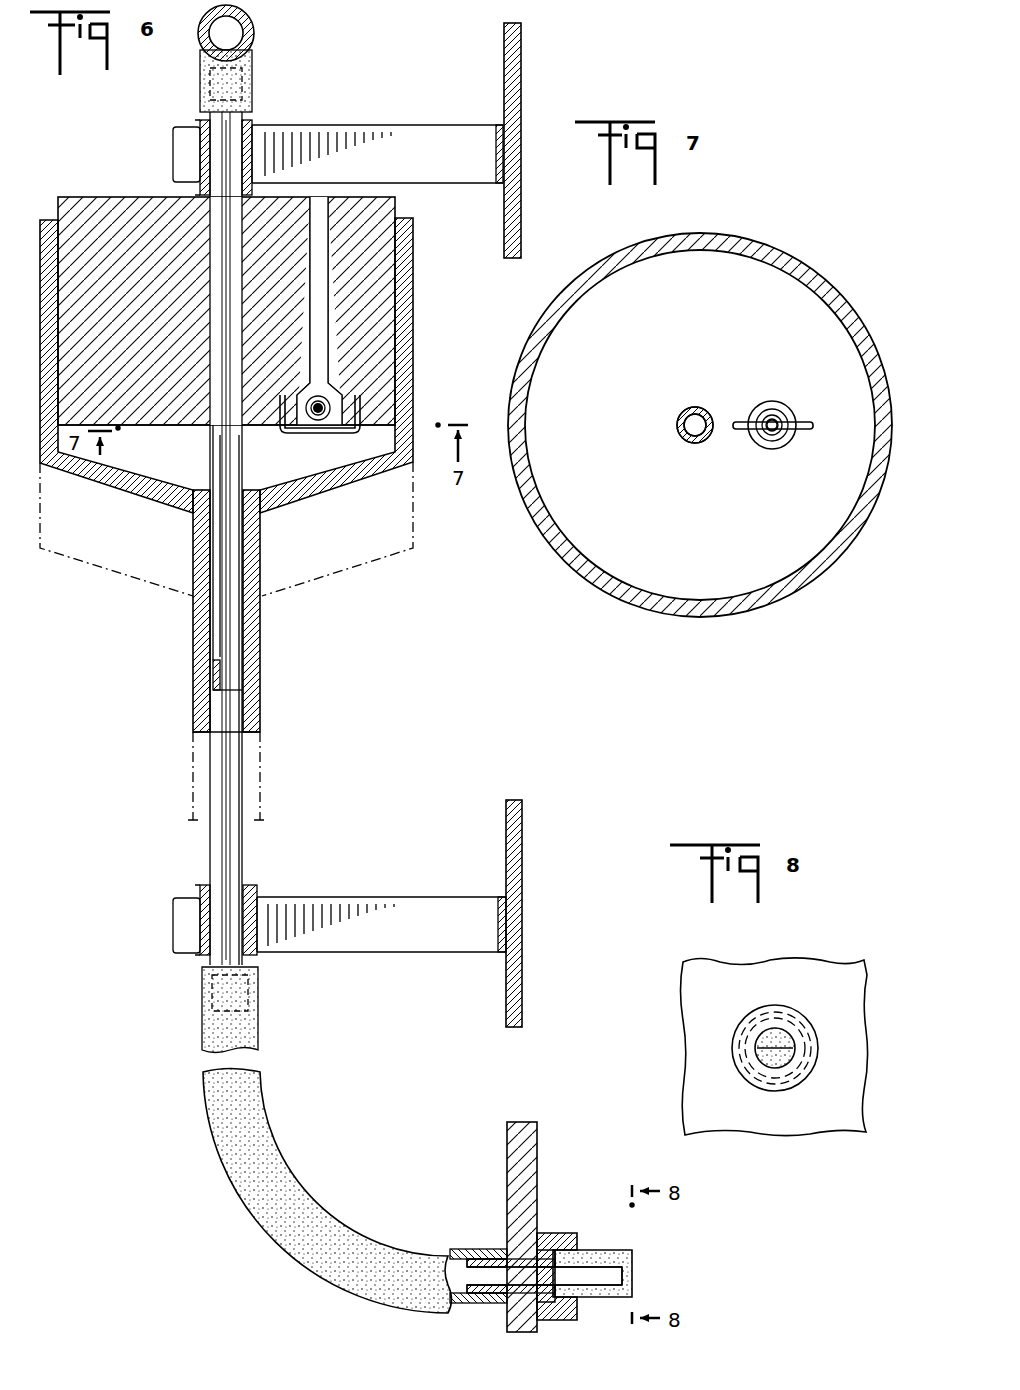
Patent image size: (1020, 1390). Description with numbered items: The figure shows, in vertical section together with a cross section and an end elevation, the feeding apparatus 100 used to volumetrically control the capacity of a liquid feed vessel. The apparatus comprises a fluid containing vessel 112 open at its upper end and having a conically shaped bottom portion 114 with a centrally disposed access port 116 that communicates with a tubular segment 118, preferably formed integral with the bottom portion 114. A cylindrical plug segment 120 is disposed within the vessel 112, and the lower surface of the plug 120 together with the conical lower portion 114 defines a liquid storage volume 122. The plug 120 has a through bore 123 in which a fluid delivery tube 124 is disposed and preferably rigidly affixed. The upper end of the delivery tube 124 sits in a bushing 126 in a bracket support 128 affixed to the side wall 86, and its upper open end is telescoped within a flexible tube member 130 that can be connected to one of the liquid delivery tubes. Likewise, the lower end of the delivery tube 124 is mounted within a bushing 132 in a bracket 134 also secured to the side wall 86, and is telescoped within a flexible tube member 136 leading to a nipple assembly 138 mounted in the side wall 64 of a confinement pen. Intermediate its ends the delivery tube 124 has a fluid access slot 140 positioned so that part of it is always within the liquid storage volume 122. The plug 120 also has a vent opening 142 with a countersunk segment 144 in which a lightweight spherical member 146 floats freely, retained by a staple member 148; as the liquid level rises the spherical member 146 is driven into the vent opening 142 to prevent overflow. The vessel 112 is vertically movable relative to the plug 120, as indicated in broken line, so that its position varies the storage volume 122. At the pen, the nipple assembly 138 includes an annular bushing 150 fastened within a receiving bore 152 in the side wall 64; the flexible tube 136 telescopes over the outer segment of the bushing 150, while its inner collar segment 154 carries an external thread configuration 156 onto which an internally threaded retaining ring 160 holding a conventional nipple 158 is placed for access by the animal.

In FIG. 6, the side wall 64 is at (522, 1142).
In FIG. 8, the side wall 64 is at (700, 988).
In FIG. 6, the side wall 86 is at (508, 45).
In FIG. 6, the feeding apparatus 100 is at (348, 612).
In FIG. 7, the feeding apparatus 100 is at (790, 232).
In FIG. 6, the fluid containing vessel 112 is at (405, 298).
In FIG. 7, the fluid containing vessel 112 is at (842, 528).
In FIG. 6, the conically shaped bottom portion 114 is at (135, 492).
In FIG. 6, the access port 116 is at (252, 497).
In FIG. 6, the tubular segment 118 is at (258, 700).
In FIG. 6, the cylindrical plug segment 120 is at (105, 225).
In FIG. 7, the cylindrical plug segment 120 is at (640, 575).
In FIG. 6, the liquid storage volume 122 is at (165, 456).
In FIG. 6, the through bore 123 is at (210, 272).
In FIG. 7, the through bore 123 is at (684, 410).
In FIG. 6, the fluid delivery tube 124 is at (222, 340).
In FIG. 7, the fluid delivery tube 124 is at (700, 437).
In FIG. 6, the bushing 126 is at (247, 130).
In FIG. 6, the bracket support 128 is at (386, 144).
In FIG. 6, the flexible tube member 130 is at (250, 26).
In FIG. 6, the bushing 132 is at (255, 885).
In FIG. 6, the bracket 134 is at (395, 920).
In FIG. 6, the flexible tube member 136 is at (280, 1225).
In FIG. 6, the nipple assembly 138 is at (577, 1244).
In FIG. 8, the nipple assembly 138 is at (845, 992).
In FIG. 6, the fluid access slot 140 is at (214, 440).
In FIG. 7, the fluid access slot 140 is at (680, 422).
In FIG. 6, the vent opening 142 is at (320, 245).
In FIG. 6, the countersunk segment 144 is at (307, 398).
In FIG. 7, the countersunk segment 144 is at (770, 402).
In FIG. 6, the spherical member 146 is at (328, 392).
In FIG. 7, the spherical member 146 is at (778, 410).
In FIG. 6, the staple member 148 is at (390, 448).
In FIG. 7, the staple member 148 is at (800, 430).
In FIG. 6, the annular bushing 150 is at (480, 1260).
In FIG. 6, the receiving bore 152 is at (505, 1258).
In FIG. 6, the collar segment 154 is at (520, 1302).
In FIG. 6, the external thread configuration 156 is at (545, 1245).
In FIG. 8, the external thread configuration 156 is at (748, 1072).
In FIG. 6, the nipple 158 is at (600, 1255).
In FIG. 8, the nipple 158 is at (780, 1057).
In FIG. 6, the retaining ring 160 is at (562, 1248).
In FIG. 8, the retaining ring 160 is at (740, 1040).